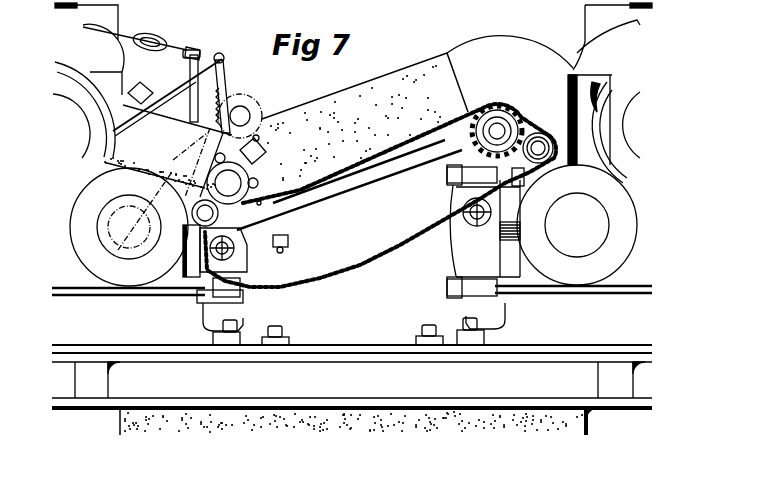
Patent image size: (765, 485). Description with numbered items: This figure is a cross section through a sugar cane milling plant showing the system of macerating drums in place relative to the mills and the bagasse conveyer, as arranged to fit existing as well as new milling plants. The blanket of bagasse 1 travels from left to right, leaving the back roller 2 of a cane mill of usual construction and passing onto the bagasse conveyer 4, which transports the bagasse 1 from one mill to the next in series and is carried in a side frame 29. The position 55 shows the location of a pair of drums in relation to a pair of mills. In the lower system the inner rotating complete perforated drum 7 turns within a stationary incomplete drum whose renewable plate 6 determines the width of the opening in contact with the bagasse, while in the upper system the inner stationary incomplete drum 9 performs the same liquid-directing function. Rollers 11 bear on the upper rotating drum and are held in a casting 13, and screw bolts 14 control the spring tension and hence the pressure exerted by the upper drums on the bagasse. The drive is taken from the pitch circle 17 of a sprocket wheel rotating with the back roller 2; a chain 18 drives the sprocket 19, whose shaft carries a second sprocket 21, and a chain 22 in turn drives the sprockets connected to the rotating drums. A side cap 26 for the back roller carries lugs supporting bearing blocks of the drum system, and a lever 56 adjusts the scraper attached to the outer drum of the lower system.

The blanket of bagasse 1 is at (133, 165).
The back roller 2 is at (129, 227).
The bagasse conveyer 4 is at (322, 185).
The renewable plate 6 is at (256, 198).
The inner rotating complete perforated drum 7 is at (205, 213).
The inner stationary incomplete drum 9 is at (228, 183).
The rollers 11 is at (258, 180).
The casting 13 is at (257, 156).
The screw bolts 14 is at (270, 142).
The pitch circle of a sprocket wheel 17 is at (113, 232).
The chain 18 is at (152, 182).
The sprocket 19 is at (240, 125).
The second sprocket 21 is at (236, 100).
The chain 22 is at (198, 162).
The side cap 26 is at (256, 268).
The side frame 29 is at (177, 123).
The location of a pair of drums 55 is at (258, 138).
The lever 56 is at (198, 104).